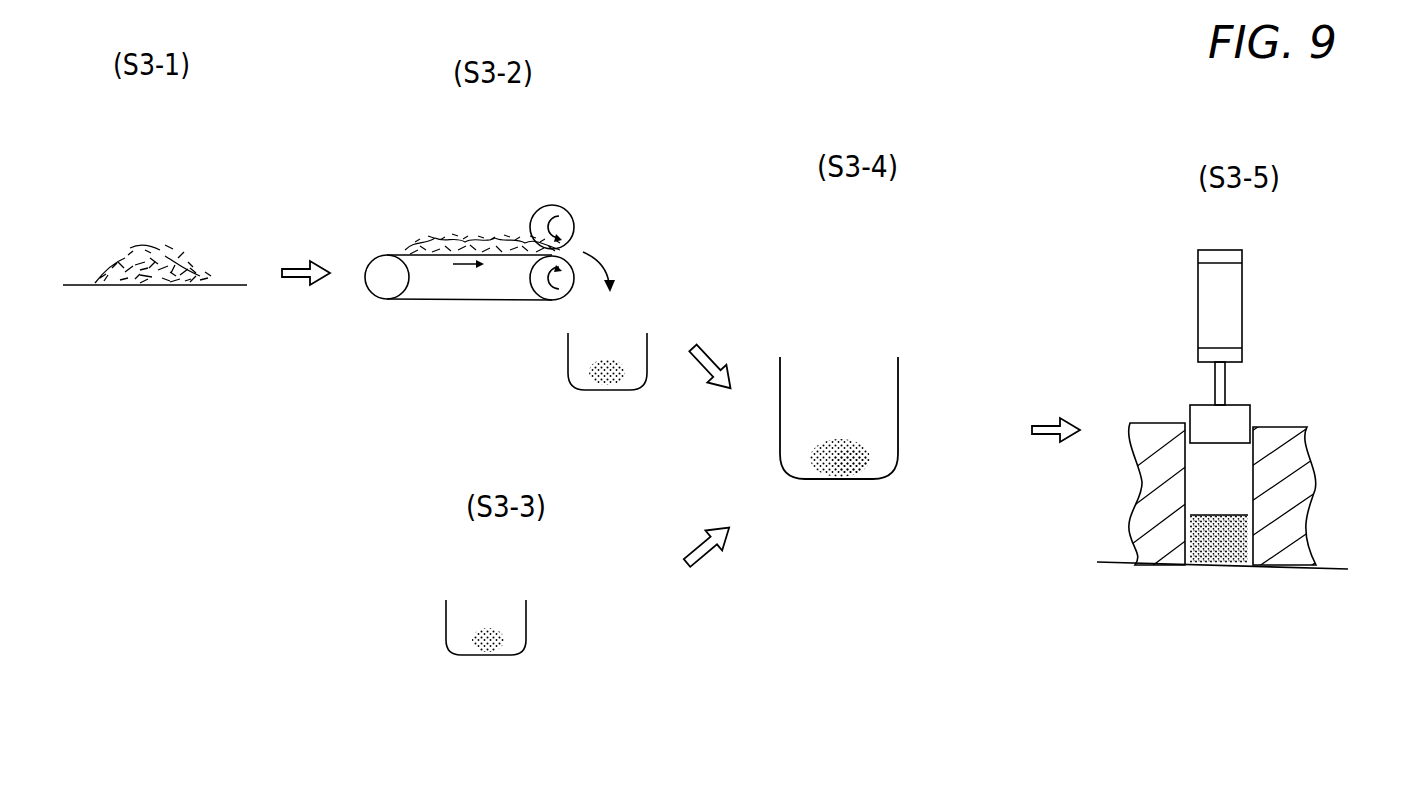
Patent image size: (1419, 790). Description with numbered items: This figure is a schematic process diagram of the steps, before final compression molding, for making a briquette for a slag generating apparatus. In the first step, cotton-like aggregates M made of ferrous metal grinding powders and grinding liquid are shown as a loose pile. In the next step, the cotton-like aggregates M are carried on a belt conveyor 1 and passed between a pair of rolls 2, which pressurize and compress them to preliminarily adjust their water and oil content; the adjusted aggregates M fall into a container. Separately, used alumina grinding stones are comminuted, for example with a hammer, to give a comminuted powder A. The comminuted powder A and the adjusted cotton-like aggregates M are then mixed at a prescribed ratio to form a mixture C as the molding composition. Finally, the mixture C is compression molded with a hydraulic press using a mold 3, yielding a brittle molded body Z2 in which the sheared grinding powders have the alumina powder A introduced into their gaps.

The cotton-like aggregates M is at (163, 262).
The belt conveyor 1 is at (450, 302).
The rolls 2 is at (560, 226).
The comminuted powder A is at (483, 657).
The mixture C is at (848, 378).
The mold 3 is at (1290, 517).
The brittle molded body Z2 is at (1213, 565).